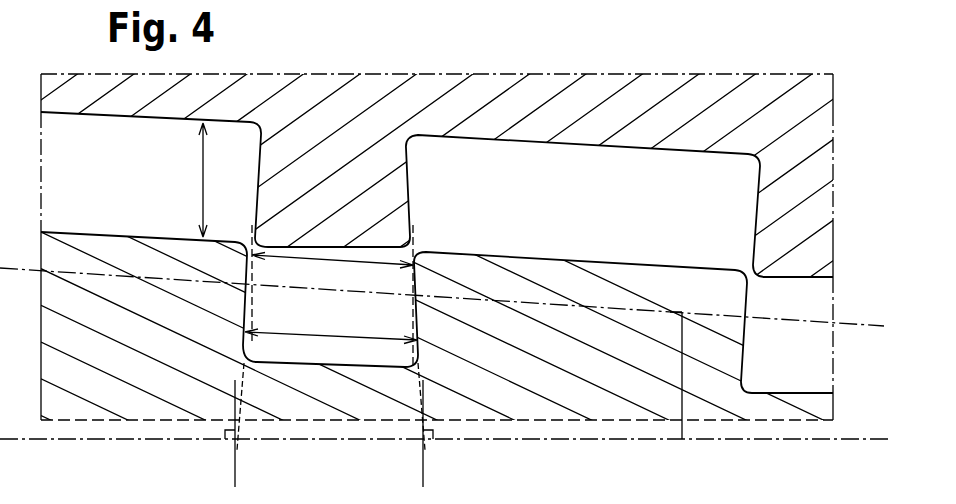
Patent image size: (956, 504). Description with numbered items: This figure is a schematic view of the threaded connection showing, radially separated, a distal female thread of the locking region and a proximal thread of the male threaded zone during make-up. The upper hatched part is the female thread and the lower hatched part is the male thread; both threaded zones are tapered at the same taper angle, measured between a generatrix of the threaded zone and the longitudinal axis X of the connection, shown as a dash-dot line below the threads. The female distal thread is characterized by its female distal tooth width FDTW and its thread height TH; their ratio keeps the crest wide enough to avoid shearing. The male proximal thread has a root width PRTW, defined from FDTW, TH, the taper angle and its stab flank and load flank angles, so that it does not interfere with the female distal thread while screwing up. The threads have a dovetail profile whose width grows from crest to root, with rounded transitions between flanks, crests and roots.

The thread height TH is at (203, 181).
The female distal tooth width FDTW is at (337, 262).
The root width of the proximal thread PRTW is at (338, 336).
The longitudinal axis X is at (870, 440).